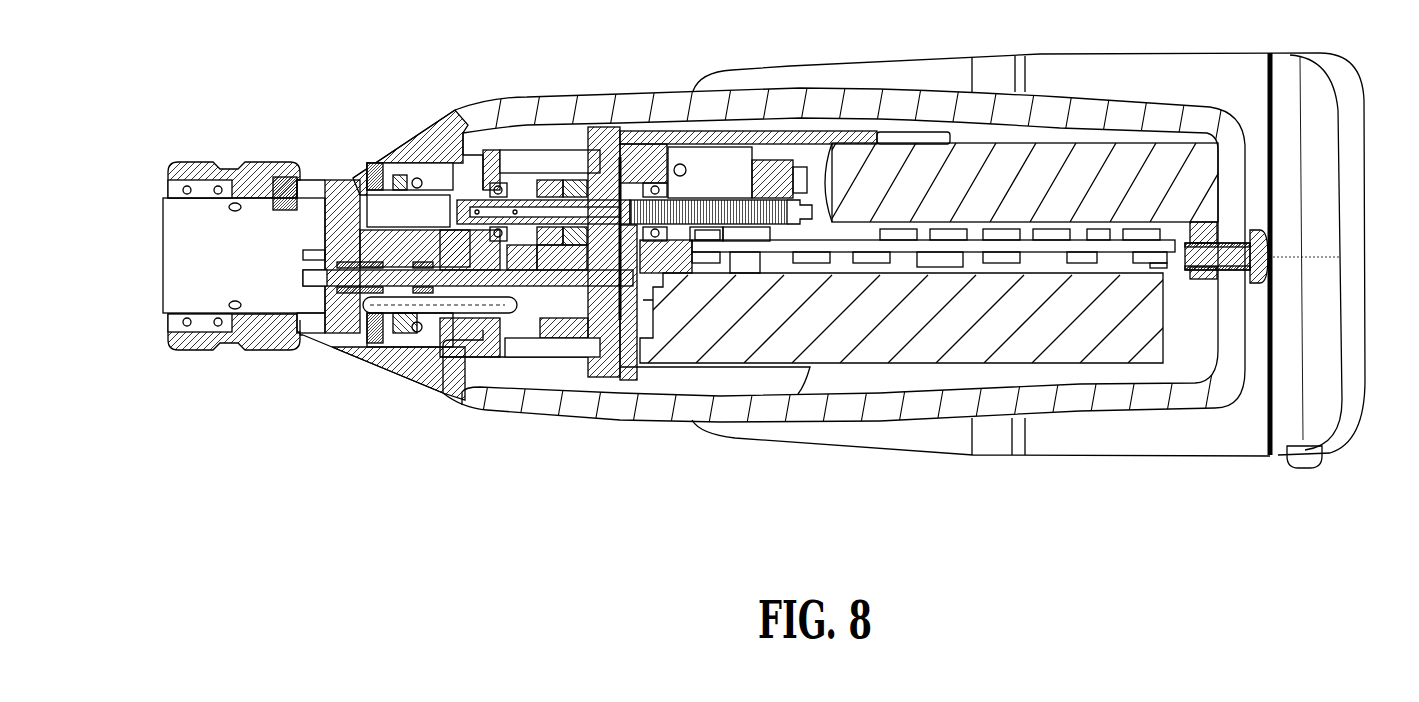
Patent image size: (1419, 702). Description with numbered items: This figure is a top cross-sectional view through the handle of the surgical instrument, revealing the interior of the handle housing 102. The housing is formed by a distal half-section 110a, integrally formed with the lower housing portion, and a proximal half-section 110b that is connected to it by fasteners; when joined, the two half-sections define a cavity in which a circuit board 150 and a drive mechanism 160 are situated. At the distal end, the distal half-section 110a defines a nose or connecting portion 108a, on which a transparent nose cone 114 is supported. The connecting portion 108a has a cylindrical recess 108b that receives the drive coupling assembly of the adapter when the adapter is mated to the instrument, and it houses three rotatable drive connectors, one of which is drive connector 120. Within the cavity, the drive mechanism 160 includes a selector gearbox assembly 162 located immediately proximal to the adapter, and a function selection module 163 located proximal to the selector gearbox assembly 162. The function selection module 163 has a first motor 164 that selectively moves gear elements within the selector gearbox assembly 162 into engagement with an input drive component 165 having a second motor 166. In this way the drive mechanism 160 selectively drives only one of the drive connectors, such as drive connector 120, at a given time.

The handle housing 102 is at (1074, 88).
The connecting portion 108a is at (193, 160).
The cylindrical recess 108b is at (180, 272).
The distal half-section 110a is at (527, 97).
The proximal half-section 110b is at (1128, 107).
The nose cone 114 is at (345, 160).
The rotatable drive connector 120 is at (310, 279).
The circuit board 150 is at (1100, 232).
The drive mechanism 160 is at (681, 118).
The selector gearbox assembly 162 is at (604, 127).
The function selection module 163 is at (744, 160).
The first motor 164 is at (1013, 155).
The input drive component 165 is at (543, 363).
The second motor 166 is at (1065, 348).